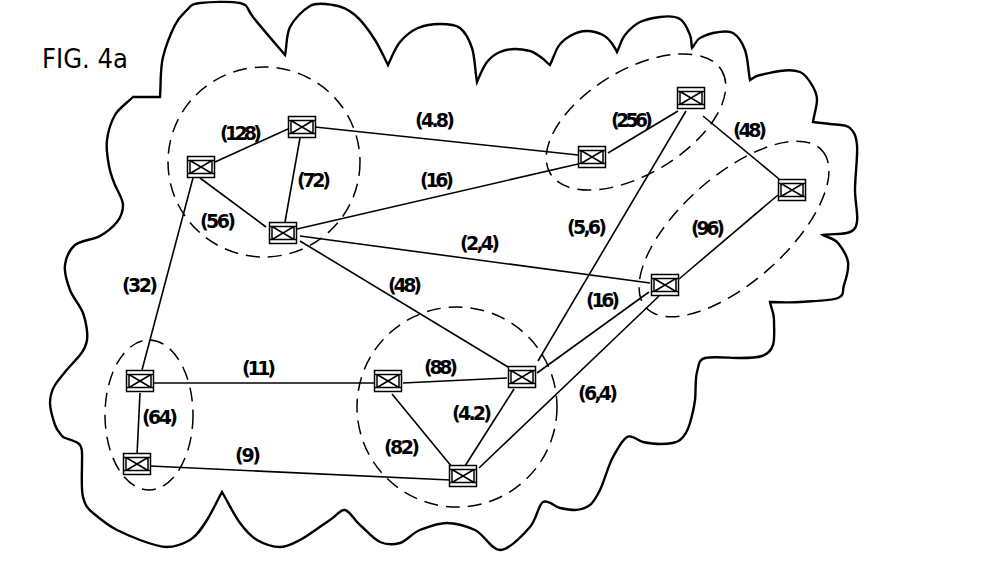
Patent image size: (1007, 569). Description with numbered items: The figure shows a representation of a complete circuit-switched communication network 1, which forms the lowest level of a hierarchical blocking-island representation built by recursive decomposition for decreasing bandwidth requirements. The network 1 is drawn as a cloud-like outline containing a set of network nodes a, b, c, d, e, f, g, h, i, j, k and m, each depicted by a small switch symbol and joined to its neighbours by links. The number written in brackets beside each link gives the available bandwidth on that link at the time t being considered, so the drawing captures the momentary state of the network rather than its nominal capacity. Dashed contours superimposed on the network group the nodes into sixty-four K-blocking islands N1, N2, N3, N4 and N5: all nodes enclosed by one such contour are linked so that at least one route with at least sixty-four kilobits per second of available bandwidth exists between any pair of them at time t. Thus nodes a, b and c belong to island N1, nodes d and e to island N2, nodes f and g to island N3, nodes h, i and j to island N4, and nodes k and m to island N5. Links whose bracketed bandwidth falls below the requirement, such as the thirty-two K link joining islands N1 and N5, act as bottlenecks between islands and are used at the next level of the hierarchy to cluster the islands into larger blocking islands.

The circuit-switched communication network 1 is at (645, 443).
The 64K-blocking island N1 is at (253, 162).
The 64K-blocking island N2 is at (636, 122).
The 64K-blocking island N3 is at (734, 229).
The 64K-blocking island N4 is at (465, 407).
The 64K-blocking island N5 is at (149, 426).
The network node a is at (194, 162).
The network node b is at (302, 116).
The network node c is at (275, 236).
The network node d is at (592, 146).
The network node e is at (691, 87).
The network node f is at (792, 176).
The network node g is at (673, 292).
The network node h is at (522, 367).
The network node i is at (388, 371).
The network node j is at (462, 463).
The network node k is at (146, 453).
The network node m is at (148, 371).